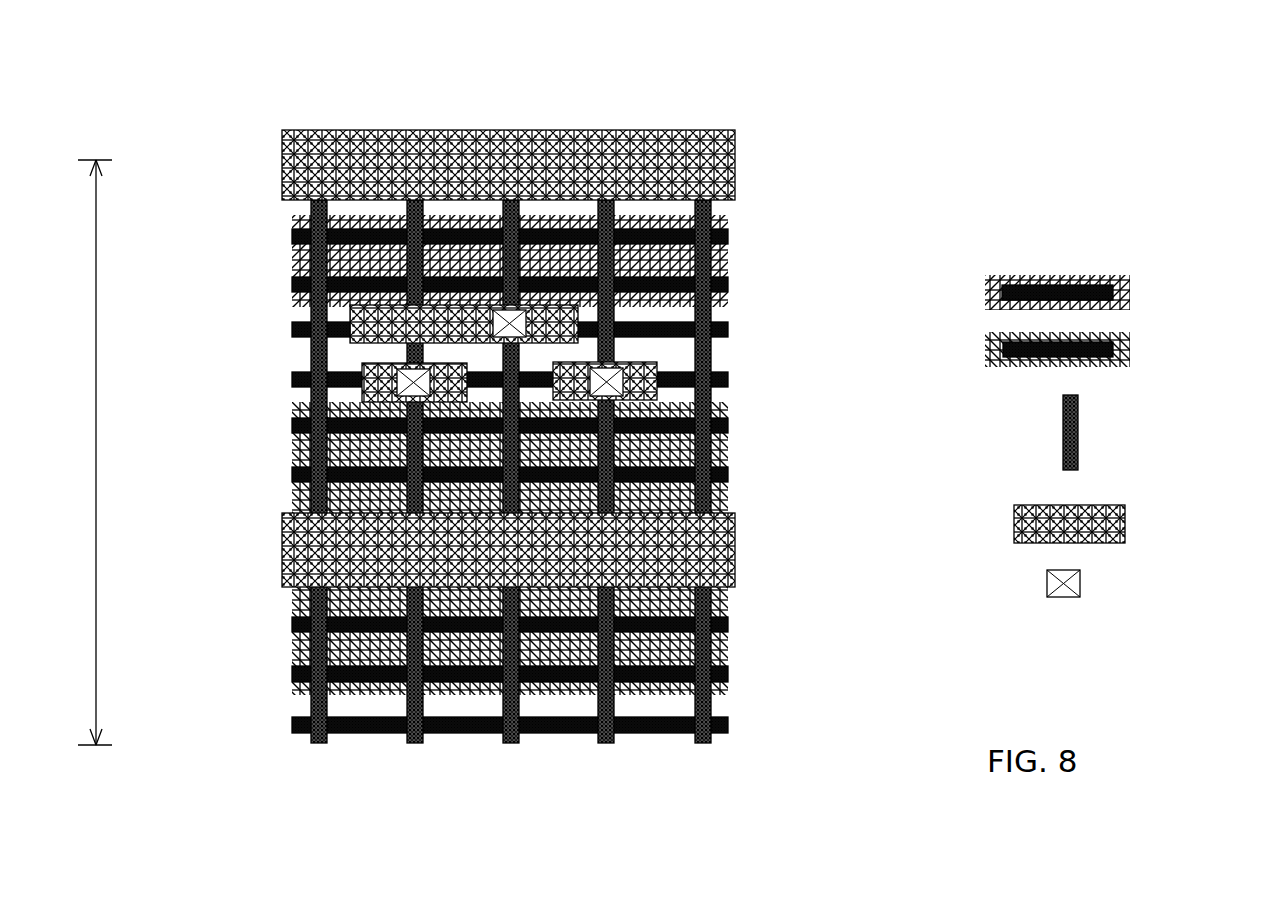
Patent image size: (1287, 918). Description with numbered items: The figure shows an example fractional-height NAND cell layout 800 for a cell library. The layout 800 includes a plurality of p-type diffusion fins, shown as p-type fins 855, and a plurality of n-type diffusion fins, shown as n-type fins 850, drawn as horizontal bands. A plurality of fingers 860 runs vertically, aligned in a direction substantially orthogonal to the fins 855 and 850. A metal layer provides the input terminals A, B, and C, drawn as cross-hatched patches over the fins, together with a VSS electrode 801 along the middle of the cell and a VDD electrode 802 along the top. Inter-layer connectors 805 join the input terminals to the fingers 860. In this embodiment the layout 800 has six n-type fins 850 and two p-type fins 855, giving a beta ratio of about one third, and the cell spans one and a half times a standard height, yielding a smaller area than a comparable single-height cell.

The fractional-height NAND cell layout 800 is at (867, 60).
The VSS electrode 801 is at (282, 550).
The VDD electrode 802 is at (282, 155).
The p-type fins 855 is at (783, 276).
The n-type fins 850 is at (783, 532).
The fingers 860 is at (743, 471).
The inter-layer connector 805 is at (842, 453).